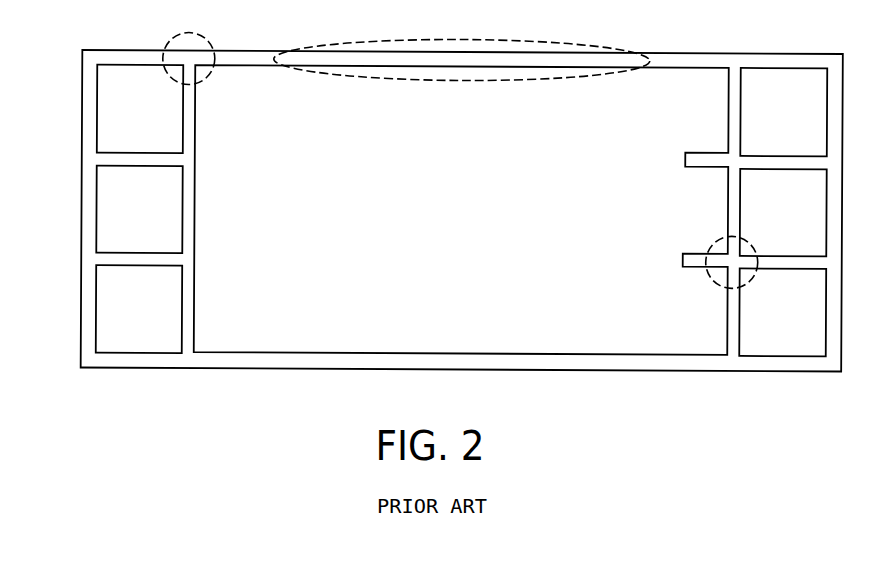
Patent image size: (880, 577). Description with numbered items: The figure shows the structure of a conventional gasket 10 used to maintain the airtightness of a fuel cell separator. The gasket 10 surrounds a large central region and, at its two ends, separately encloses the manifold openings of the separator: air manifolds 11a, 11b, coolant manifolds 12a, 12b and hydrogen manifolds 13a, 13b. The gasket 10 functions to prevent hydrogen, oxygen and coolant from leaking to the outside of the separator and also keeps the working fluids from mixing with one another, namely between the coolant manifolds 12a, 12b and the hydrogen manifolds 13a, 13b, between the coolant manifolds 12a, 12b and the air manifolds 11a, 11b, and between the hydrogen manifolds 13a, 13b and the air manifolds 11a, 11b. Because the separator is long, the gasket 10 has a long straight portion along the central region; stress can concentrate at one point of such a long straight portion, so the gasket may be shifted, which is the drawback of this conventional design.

The gasket 10 is at (82, 127).
The air manifold 11a is at (119, 122).
The air manifold 11b is at (762, 322).
The coolant manifold 12a is at (762, 222).
The coolant manifold 12b is at (119, 222).
The hydrogen manifold 13a is at (762, 122).
The hydrogen manifold 13b is at (119, 322).